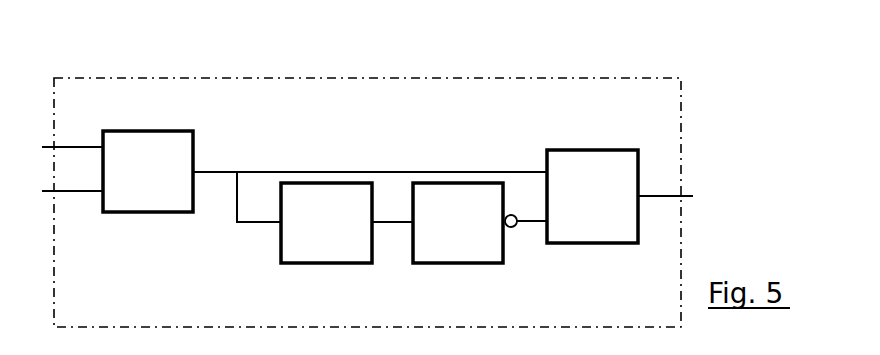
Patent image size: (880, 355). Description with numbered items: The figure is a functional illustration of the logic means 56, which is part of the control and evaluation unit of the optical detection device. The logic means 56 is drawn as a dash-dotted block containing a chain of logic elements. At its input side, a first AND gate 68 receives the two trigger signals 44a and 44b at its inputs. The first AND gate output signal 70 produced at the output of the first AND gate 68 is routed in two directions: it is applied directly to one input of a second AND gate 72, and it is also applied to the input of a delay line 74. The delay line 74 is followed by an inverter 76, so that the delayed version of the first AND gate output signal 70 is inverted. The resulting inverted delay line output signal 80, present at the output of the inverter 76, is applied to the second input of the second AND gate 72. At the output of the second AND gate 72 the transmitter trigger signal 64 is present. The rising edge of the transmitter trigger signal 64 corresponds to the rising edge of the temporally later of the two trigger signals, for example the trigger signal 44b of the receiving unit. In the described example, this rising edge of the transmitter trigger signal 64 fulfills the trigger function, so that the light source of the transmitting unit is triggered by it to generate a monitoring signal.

The logic means 56 is at (257, 79).
The trigger signal 44a is at (80, 147).
The trigger signal 44b is at (70, 193).
The first AND gate 68 is at (140, 190).
The first AND gate output signal 70 is at (207, 173).
The delay line 74 is at (299, 253).
The inverter 76 is at (436, 243).
The inverted delay line output signal 80 is at (528, 222).
The second AND gate 72 is at (593, 223).
The transmitter trigger signal 64 is at (666, 197).